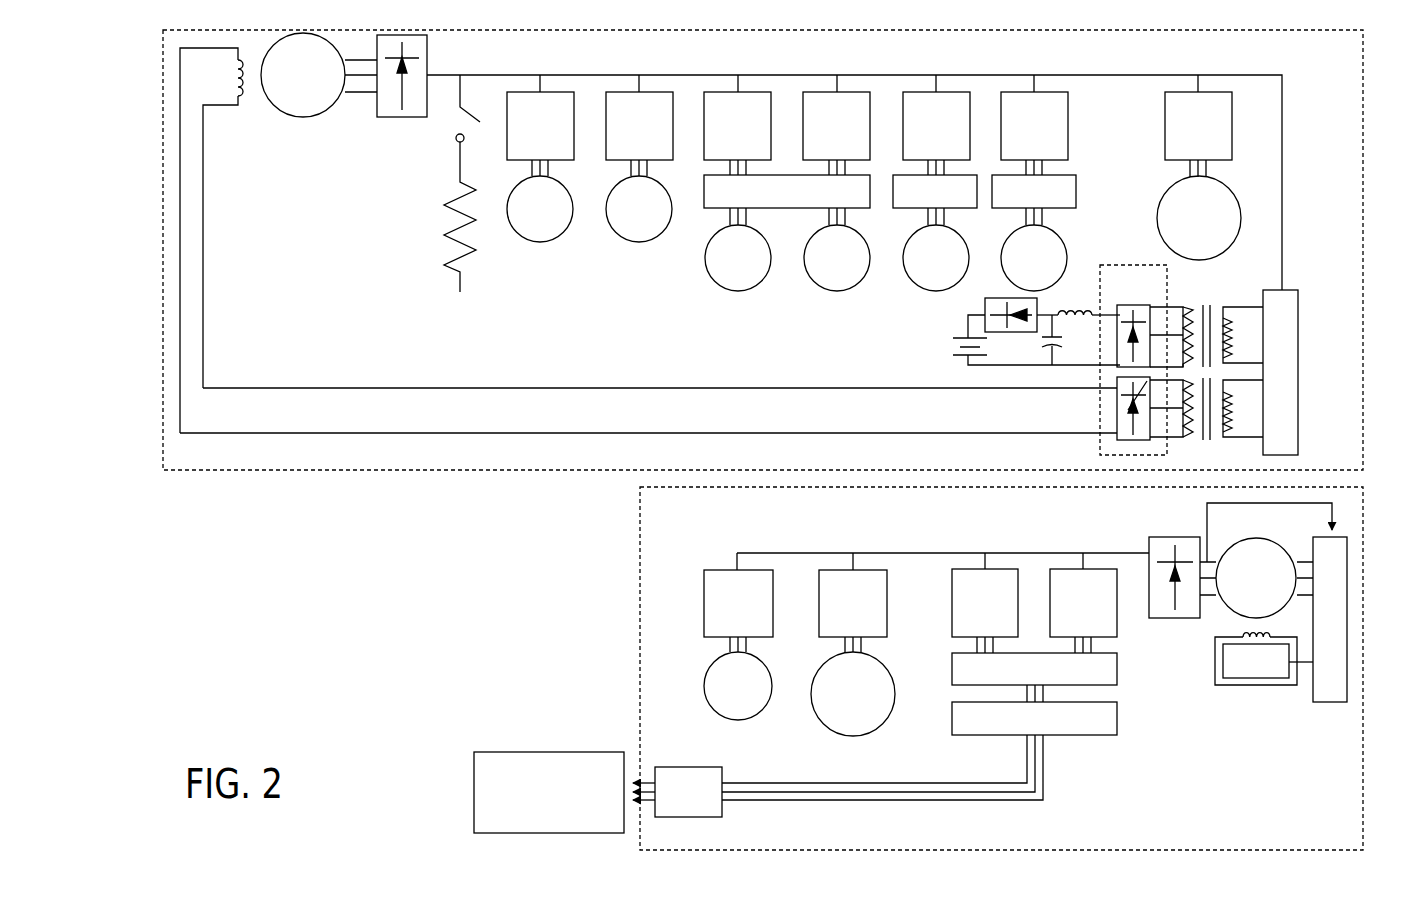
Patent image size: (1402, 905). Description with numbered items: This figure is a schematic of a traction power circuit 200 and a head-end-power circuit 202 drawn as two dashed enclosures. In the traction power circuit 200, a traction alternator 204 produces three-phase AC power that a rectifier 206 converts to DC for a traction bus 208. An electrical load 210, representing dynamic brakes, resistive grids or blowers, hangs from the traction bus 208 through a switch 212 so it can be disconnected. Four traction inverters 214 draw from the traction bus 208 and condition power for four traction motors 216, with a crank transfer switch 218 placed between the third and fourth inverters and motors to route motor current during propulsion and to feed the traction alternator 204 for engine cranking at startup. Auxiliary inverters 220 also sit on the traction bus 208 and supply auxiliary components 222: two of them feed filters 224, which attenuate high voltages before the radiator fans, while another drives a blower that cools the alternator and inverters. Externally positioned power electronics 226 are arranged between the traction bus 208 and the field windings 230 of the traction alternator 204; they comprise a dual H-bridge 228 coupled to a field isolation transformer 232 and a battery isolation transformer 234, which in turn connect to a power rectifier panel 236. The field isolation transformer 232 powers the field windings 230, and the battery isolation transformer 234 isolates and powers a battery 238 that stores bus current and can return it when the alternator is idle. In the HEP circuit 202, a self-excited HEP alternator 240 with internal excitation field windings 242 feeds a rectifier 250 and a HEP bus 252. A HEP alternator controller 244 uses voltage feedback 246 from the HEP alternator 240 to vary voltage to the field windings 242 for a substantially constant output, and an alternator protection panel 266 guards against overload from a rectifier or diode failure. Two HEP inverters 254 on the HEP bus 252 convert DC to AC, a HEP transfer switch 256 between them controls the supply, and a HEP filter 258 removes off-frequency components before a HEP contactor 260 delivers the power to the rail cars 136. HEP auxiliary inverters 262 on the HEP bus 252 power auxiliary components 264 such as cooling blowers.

The traction power circuit 200 is at (763, 250).
The HEP circuit 202 is at (1001, 668).
The traction alternator 204 is at (300, 118).
The rectifier 206 is at (400, 118).
The traction bus 208 is at (467, 75).
The electrical load 210 is at (460, 280).
The switch 212 is at (474, 108).
The traction inverters 214 is at (588, 58).
The traction motors 216 is at (625, 289).
The crank transfer switch 218 is at (797, 210).
The auxiliary inverters 220 is at (1108, 66).
The auxiliary components 222 is at (1100, 226).
The filters 224 is at (1086, 164).
The power electronics 226 is at (1298, 222).
The dual H-bridge 228 is at (1299, 346).
The field windings 230 is at (224, 108).
The field isolation transformer 232 is at (1213, 425).
The battery isolation transformer 234 is at (1215, 318).
The power rectifier panel 236 is at (1138, 265).
The battery 238 is at (955, 338).
The HEP alternator 240 is at (1228, 609).
The excitation field windings 242 is at (1240, 675).
The HEP alternator controller 244 is at (1331, 703).
The VFB 246 is at (1207, 516).
The rectifier 250 is at (1170, 619).
The HEP bus 252 is at (920, 552).
The HEP inverters 254 is at (1008, 549).
The HEP transfer switch 256 is at (1117, 668).
The HEP filter 258 is at (1117, 718).
The HEP contactor 260 is at (722, 812).
The HEP auxiliary inverters 262 is at (728, 535).
The auxiliary components 264 is at (784, 716).
The alternator protection panel 266 is at (1248, 679).
The rail cars 136 is at (549, 792).